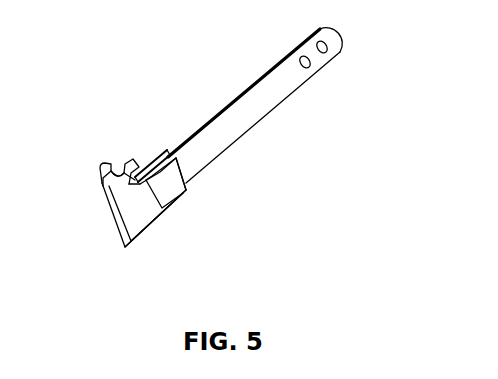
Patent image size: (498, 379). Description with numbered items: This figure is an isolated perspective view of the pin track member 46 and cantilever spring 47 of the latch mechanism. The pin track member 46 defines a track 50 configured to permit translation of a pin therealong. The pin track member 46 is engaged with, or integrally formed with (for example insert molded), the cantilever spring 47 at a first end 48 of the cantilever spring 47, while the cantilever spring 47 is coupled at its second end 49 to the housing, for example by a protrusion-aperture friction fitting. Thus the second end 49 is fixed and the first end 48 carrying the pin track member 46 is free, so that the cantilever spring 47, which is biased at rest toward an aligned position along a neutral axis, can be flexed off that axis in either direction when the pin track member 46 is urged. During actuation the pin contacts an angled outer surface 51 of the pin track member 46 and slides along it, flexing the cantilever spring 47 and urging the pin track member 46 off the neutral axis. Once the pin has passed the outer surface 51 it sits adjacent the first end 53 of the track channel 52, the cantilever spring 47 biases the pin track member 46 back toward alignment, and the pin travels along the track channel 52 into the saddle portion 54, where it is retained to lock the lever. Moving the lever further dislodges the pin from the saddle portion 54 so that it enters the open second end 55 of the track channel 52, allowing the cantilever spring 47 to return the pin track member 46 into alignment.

The pin track member 46 is at (186, 189).
The cantilever spring 47 is at (250, 125).
The first end 48 is at (177, 160).
The second end 49 is at (327, 32).
The track 50 is at (150, 160).
The outer surface 51 is at (104, 199).
The track channel 52 is at (160, 181).
The first end 53 is at (118, 168).
The saddle portion 54 is at (107, 198).
The second end 55 is at (151, 186).